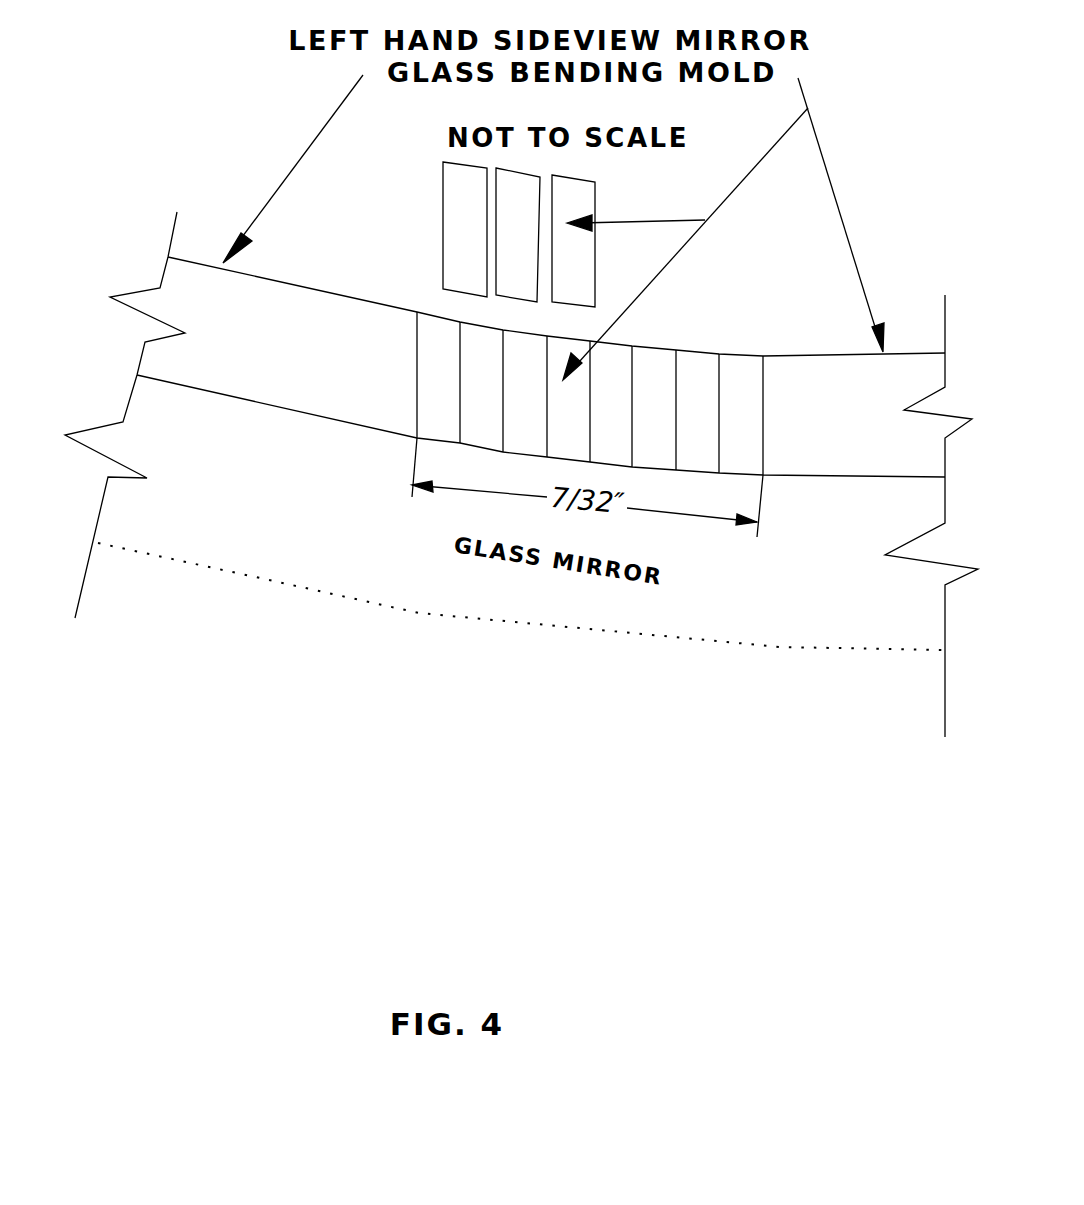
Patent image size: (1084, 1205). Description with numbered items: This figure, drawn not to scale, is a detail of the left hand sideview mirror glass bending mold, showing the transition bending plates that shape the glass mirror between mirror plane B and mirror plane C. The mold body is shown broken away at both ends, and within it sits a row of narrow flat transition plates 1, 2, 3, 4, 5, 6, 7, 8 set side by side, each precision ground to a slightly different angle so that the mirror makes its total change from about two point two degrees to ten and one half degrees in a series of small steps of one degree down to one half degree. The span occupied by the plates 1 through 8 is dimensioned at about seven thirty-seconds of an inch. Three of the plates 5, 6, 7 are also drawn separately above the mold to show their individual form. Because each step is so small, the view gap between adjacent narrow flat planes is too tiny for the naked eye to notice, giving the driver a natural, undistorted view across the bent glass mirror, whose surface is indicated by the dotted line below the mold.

The transition bending plate 1 is at (747, 415).
The transition bending plate 2 is at (703, 413).
The transition bending plate 3 is at (660, 410).
The transition bending plate 4 is at (617, 406).
The transition bending plate 5 is at (573, 318).
The transition bending plate 6 is at (521, 312).
The transition bending plate 7 is at (473, 307).
The transition bending plate 8 is at (438, 377).